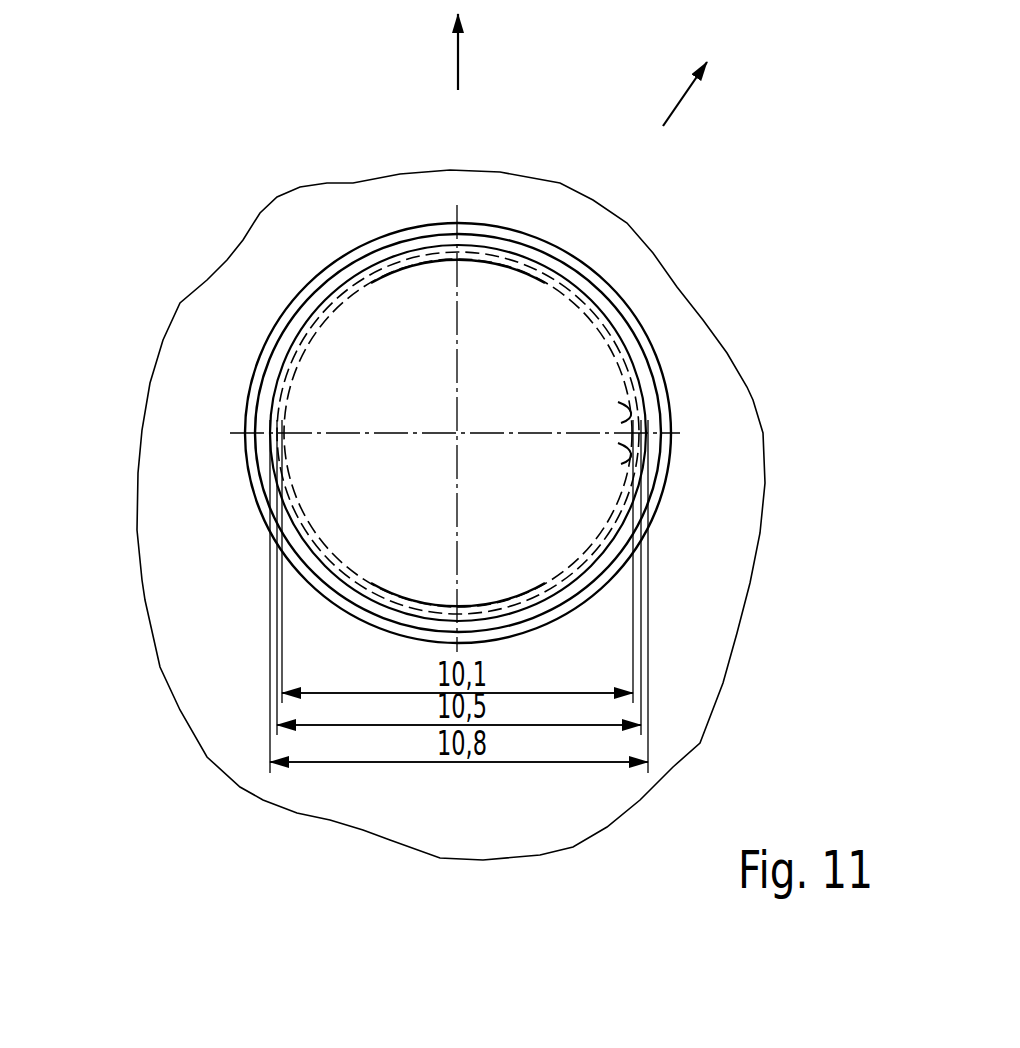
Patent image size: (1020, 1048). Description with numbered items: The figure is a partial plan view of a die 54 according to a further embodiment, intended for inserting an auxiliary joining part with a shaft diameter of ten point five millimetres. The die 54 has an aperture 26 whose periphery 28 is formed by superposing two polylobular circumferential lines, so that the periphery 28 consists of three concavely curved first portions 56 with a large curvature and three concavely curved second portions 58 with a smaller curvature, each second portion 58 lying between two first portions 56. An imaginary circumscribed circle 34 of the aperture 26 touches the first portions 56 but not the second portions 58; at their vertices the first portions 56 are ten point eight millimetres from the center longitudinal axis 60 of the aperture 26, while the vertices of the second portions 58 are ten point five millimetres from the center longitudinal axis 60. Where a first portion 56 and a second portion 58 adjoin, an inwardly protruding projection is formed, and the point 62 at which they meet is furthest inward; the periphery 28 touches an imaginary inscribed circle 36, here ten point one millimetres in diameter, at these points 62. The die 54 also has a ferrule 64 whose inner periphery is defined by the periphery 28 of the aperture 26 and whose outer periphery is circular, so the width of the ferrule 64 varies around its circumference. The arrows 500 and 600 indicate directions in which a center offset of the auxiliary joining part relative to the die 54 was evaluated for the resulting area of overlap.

The aperture 26 is at (593, 487).
The periphery 28 is at (612, 468).
The imaginary circumscribed circle 34 is at (628, 350).
The imaginary inscribed circle 36 is at (633, 422).
The die 54 is at (760, 388).
The first concavely curved portions 56 is at (557, 263).
The second concavely curved portions 58 is at (375, 265).
The center longitudinal axis 60 is at (457, 433).
The point 62 is at (461, 258).
The ferrule 64 is at (520, 618).
The arrow 500 is at (459, 68).
The arrow 600 is at (680, 108).